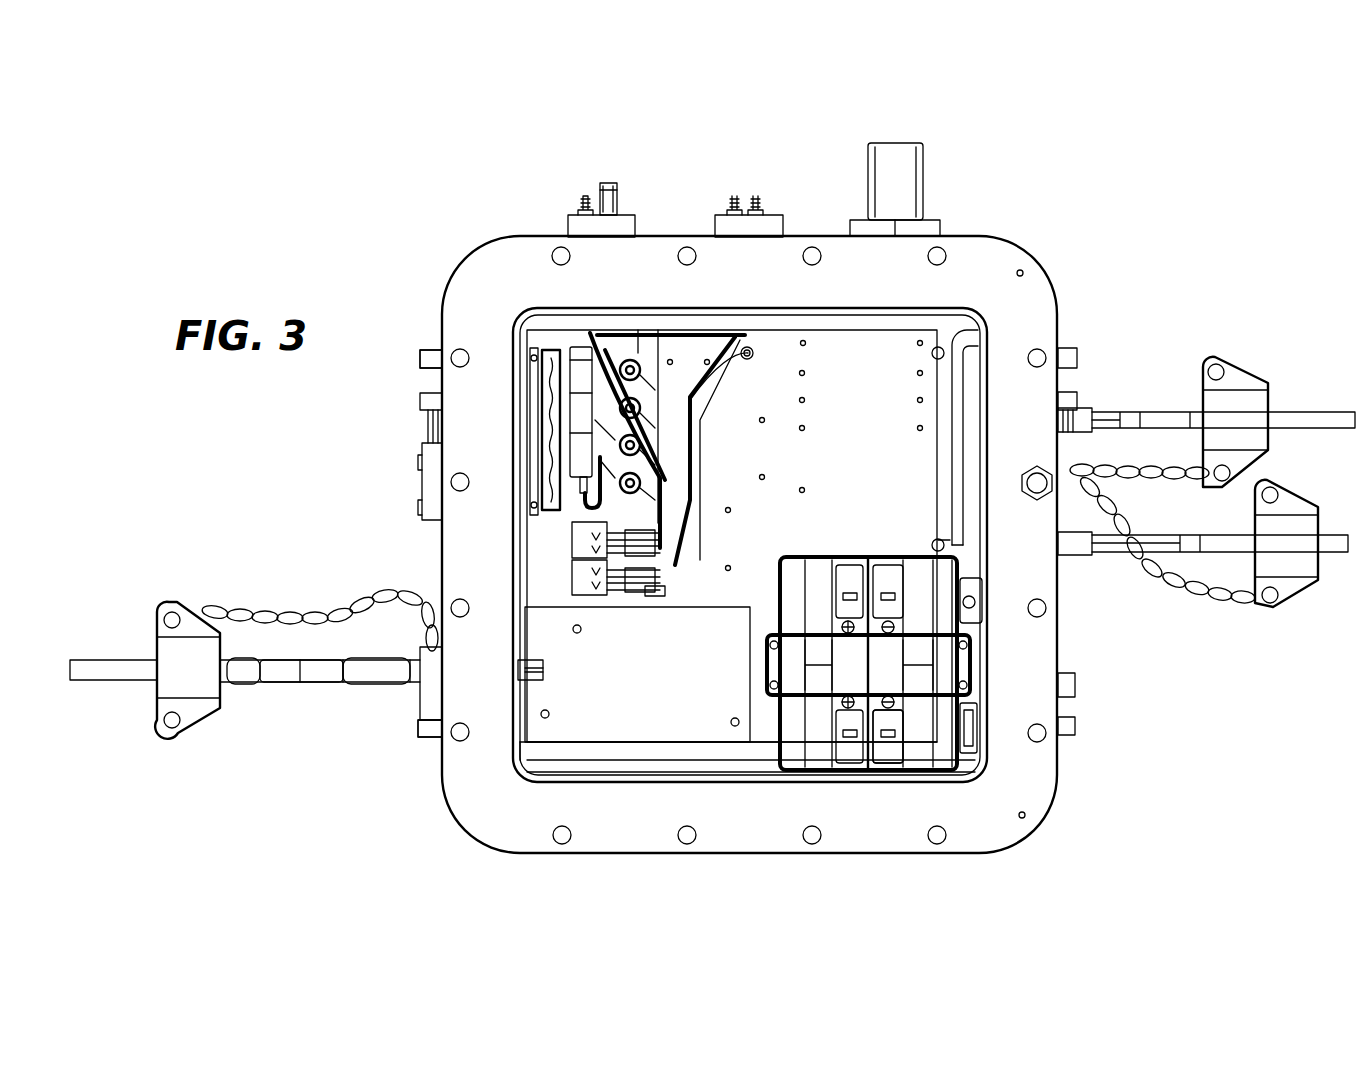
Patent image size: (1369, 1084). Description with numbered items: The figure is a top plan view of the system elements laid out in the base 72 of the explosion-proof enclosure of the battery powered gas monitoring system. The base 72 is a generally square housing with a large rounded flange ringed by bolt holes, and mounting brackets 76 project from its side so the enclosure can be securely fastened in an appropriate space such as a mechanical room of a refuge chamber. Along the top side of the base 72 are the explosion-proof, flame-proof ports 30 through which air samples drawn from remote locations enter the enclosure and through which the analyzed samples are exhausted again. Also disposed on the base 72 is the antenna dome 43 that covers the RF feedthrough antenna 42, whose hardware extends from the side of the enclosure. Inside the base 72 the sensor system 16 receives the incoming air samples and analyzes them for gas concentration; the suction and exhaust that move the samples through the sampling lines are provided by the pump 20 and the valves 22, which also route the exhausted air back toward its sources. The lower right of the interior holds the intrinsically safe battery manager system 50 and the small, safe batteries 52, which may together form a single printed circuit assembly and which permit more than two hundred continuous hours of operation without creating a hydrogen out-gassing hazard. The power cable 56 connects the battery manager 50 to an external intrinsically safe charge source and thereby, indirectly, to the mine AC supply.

The sensor system 16 is at (640, 332).
The pump 20 is at (572, 577).
The valves 22 is at (680, 497).
The explosion-proof/flame-proof ports 30 is at (567, 226).
The RF feedthrough antenna 42 is at (1112, 412).
The antenna dome 43 is at (918, 188).
The battery manager system 50 is at (815, 747).
The batteries 52 is at (887, 748).
The power cable 56 is at (125, 660).
The base 72 is at (1187, 203).
The mounting brackets 76 is at (420, 350).